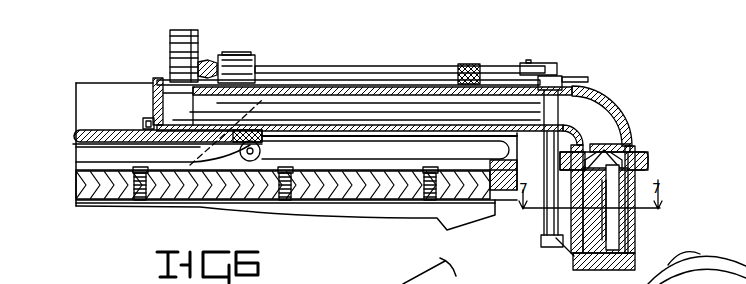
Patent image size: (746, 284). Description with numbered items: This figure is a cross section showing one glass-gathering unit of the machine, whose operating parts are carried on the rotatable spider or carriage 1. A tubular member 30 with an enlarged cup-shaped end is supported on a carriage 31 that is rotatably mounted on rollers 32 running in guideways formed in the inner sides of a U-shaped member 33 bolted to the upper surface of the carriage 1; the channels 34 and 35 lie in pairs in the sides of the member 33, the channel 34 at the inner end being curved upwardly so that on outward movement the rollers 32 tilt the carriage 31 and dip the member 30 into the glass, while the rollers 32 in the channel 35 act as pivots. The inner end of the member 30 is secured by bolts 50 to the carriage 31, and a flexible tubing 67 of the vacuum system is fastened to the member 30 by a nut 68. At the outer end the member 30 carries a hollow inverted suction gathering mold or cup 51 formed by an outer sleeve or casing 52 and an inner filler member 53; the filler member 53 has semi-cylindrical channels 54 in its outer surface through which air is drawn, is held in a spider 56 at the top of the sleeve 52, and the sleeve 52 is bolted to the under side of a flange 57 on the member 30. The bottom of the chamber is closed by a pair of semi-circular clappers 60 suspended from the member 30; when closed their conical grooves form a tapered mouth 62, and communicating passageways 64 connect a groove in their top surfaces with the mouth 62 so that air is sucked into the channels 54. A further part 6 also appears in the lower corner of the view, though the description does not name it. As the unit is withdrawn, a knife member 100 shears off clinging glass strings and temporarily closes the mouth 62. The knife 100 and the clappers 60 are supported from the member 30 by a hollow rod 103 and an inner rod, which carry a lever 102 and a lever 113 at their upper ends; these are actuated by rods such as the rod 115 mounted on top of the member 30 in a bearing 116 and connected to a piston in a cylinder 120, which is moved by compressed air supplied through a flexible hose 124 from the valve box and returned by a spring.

The spider or carriage 1 is at (410, 195).
The rim 6 is at (721, 283).
The tubular member 30 is at (592, 110).
The carriage 31 is at (102, 129).
The roller 32 is at (247, 161).
The U-shaped member 33 is at (183, 170).
The channel 34 is at (100, 153).
The channel 35 is at (363, 153).
The bolt 50 is at (147, 118).
The suction gathering mold or cup 51 is at (635, 222).
The outer sleeve or casing 52 is at (648, 163).
The inner filler member 53 is at (620, 232).
The semi-cylindrical channel 54 is at (557, 247).
The spider 56 is at (612, 143).
The flange 57 is at (643, 157).
The closure member or clapper 60 is at (707, 268).
The mouth 62 is at (636, 263).
The communicating passageway 64 is at (702, 247).
The flexible tubing 67 is at (197, 38).
The nut 68 is at (159, 79).
The knife member 100 is at (450, 267).
The lever 102 is at (577, 79).
The rod 103 is at (547, 223).
The lever 113 is at (548, 63).
The rod 115 is at (323, 68).
The bearing 116 is at (468, 66).
The cylinder 120 is at (243, 71).
The flexible hose 124 is at (219, 60).